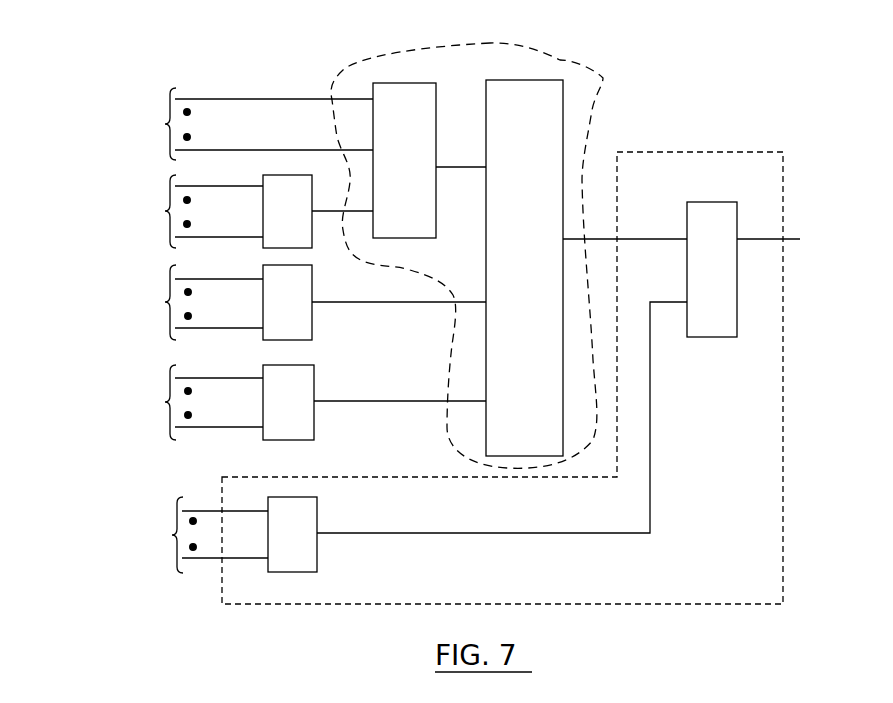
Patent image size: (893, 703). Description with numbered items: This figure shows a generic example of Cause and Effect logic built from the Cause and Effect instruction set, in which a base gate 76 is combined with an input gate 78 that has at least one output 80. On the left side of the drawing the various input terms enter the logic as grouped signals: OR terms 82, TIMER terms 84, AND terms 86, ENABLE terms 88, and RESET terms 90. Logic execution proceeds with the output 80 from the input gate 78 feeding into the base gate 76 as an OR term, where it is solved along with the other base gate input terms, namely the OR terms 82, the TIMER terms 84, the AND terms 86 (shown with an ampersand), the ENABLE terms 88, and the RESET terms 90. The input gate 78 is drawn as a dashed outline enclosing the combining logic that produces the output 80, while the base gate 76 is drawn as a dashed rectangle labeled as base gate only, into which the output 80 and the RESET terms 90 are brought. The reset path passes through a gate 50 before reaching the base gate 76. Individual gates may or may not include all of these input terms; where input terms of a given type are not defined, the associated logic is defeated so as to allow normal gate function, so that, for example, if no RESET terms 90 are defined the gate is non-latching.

The OR terms 82 is at (79, 120).
The TIMER terms 84 is at (81, 193).
The AND terms 86 is at (84, 292).
The ENABLE terms 88 is at (84, 412).
The RESET terms 90 is at (87, 528).
The reset OR gate 50 is at (270, 515).
The input gate 78 is at (560, 60).
The output 80 is at (600, 238).
The base gate 76 is at (783, 395).